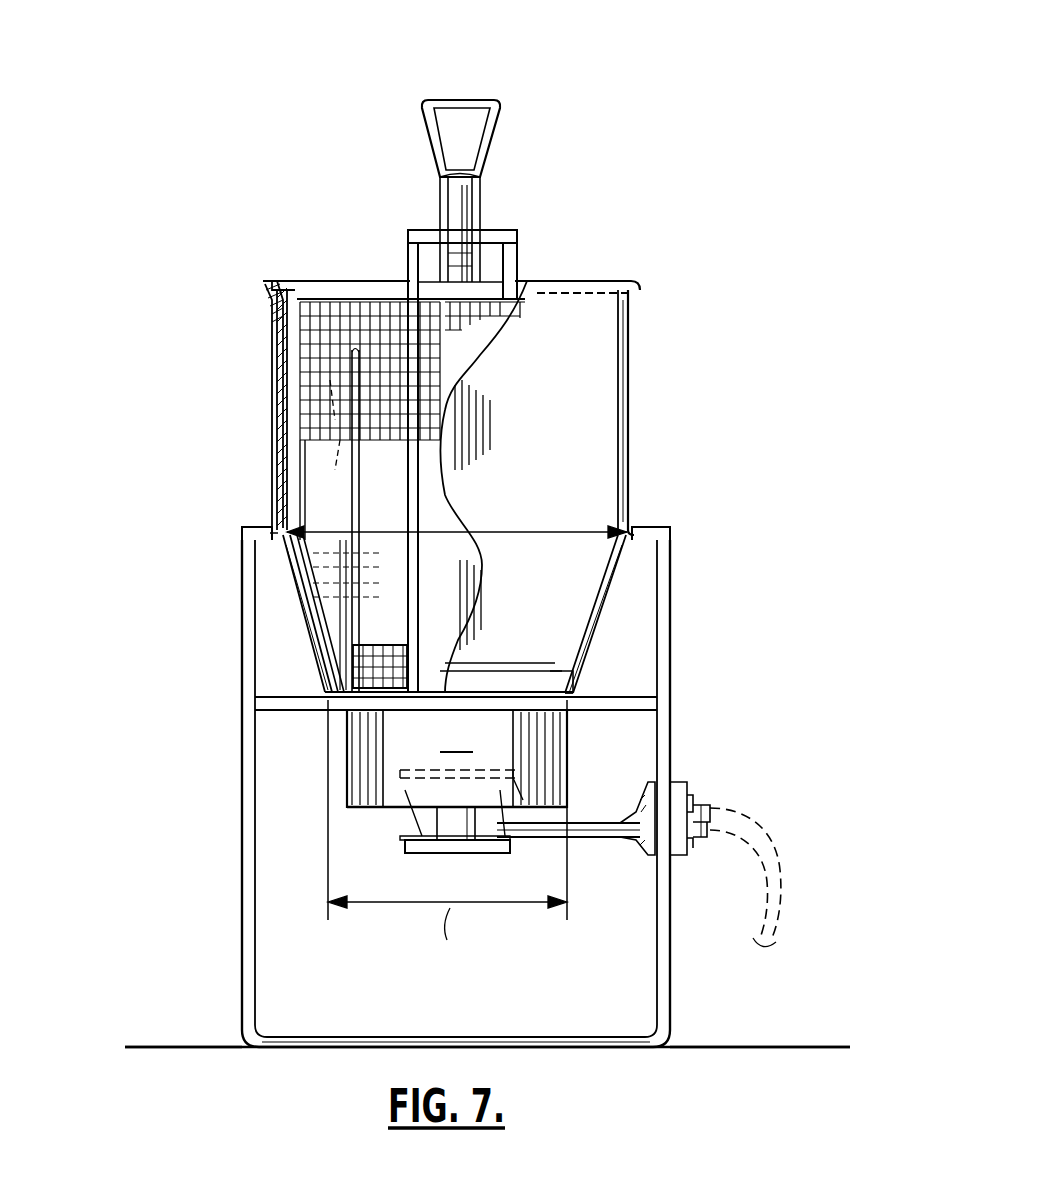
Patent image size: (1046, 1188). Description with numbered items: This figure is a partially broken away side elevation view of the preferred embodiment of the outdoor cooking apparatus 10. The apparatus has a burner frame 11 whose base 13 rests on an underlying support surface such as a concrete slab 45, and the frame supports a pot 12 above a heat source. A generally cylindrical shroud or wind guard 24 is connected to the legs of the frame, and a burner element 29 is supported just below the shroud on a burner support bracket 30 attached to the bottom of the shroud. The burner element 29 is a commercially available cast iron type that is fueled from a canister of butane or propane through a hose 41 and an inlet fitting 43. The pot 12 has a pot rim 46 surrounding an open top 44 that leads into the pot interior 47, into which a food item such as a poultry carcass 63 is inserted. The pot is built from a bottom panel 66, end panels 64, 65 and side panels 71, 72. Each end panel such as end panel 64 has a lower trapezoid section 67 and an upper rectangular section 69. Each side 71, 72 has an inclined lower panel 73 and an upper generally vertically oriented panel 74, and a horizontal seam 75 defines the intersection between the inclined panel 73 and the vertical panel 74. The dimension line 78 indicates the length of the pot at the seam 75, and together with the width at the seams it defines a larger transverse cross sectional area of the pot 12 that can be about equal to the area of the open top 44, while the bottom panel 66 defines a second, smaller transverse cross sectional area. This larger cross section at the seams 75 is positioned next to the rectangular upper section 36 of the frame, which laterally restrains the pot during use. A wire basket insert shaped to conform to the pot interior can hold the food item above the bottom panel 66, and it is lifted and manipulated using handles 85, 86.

The outdoor cooking apparatus 10 is at (593, 81).
The burner frame 11 is at (246, 806).
The pot 12 is at (633, 289).
The base 13 is at (320, 1042).
The shroud 24 is at (457, 758).
The burner element 29 is at (425, 814).
The burner support bracket 30 is at (447, 848).
The rectangular upper section 36 is at (242, 530).
The hose 41 is at (793, 909).
The inlet fitting 43 is at (710, 792).
The open top 44 is at (367, 283).
The concrete slab 45 is at (198, 1046).
The pot rim 46 is at (276, 282).
The pot interior 47 is at (325, 282).
The poultry carcass 63 is at (297, 476).
The end panel 64 is at (597, 444).
The end panel 65 is at (332, 518).
The bottom panel 66 is at (328, 668).
The lower trapezoid section 67 is at (600, 558).
The upper rectangular section 69 is at (603, 324).
The side panel 71 is at (630, 390).
The side panel 72 is at (277, 390).
The inclined lower panel 73 is at (588, 663).
The upper vertical panel 74 is at (630, 478).
The horizontal seam 75 is at (284, 540).
The dimension line 78 is at (543, 532).
The handle 85 is at (493, 136).
The handle 86 is at (504, 233).